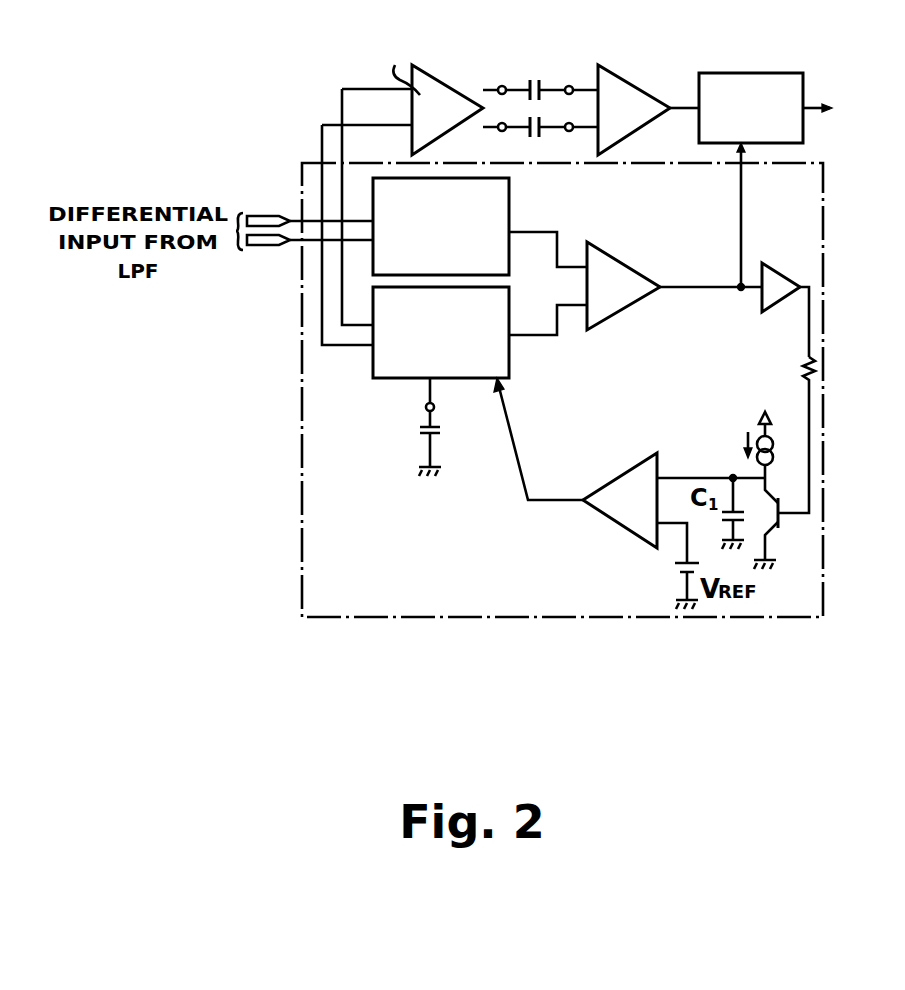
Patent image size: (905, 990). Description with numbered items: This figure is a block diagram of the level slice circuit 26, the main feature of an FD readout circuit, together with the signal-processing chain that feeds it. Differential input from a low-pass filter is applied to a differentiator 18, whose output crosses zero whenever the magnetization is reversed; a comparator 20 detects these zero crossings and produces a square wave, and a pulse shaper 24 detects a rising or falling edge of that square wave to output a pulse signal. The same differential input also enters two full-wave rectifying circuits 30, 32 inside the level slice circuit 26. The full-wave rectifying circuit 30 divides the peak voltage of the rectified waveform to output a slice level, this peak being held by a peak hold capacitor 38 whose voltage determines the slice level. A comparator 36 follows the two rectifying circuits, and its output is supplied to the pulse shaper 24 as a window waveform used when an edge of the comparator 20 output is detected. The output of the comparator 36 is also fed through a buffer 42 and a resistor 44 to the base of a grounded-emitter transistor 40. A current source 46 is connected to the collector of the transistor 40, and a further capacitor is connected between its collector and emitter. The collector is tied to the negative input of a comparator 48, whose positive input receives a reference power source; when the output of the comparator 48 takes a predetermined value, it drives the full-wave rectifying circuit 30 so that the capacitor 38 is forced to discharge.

The differentiator 18 is at (452, 90).
The comparator 20 is at (647, 92).
The pulse shaper 24 is at (763, 74).
The level slice circuit 26 is at (806, 160).
The full-wave rectifying circuit 30 is at (462, 378).
The full-wave rectifying circuit 32 is at (512, 190).
The comparator 36 is at (636, 272).
The peak hold capacitor 38 is at (418, 428).
The grounded-emitter transistor 40 is at (780, 530).
The buffer 42 is at (780, 274).
The resistor 44 is at (798, 370).
The current source 46 is at (772, 424).
The comparator 48 is at (608, 484).